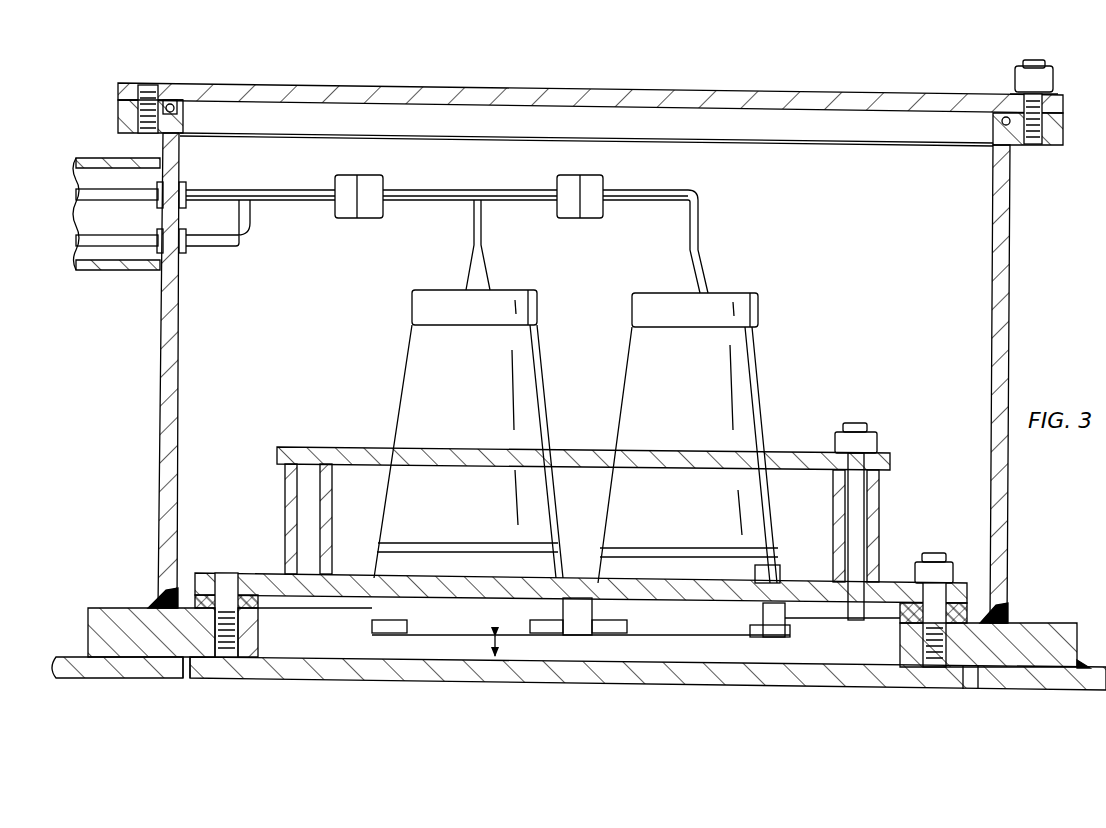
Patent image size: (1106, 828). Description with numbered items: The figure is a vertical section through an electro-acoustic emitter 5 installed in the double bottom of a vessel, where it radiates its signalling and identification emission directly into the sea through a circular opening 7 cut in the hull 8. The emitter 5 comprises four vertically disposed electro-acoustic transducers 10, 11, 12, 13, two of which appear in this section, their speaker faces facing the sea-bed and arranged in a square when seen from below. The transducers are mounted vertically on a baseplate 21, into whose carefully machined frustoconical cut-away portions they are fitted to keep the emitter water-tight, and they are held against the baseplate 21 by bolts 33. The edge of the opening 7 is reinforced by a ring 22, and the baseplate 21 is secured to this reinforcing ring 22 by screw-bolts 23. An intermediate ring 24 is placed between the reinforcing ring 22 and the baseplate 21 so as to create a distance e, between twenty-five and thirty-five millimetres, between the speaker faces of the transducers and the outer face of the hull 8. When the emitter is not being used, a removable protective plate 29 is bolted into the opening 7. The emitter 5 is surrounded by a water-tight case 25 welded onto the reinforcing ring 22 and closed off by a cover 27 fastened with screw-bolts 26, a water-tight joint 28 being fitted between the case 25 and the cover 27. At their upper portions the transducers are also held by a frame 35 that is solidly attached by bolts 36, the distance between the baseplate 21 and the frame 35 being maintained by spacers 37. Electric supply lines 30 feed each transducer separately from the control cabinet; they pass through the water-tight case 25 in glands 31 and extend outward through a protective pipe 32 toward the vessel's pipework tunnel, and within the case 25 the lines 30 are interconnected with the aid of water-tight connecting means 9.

The electro-acoustic emitter 5 is at (766, 258).
The opening 7 is at (182, 682).
The hull 8 is at (84, 660).
The water-tight connecting means 9 is at (346, 181).
The electro-acoustic transducer 10 is at (446, 434).
The electro-acoustic transducer 11 is at (676, 438).
The electro-acoustic transducer 12 is at (412, 338).
The electro-acoustic transducer 13 is at (640, 346).
The baseplate 21 is at (248, 573).
The reinforcing ring 22 is at (130, 608).
The screw-bolts 23 is at (930, 561).
The intermediate ring 24 is at (198, 574).
The water-tight case 25 is at (163, 352).
The screw-bolts 26 is at (1042, 90).
The cover 27 is at (698, 98).
The water-tight joint 28 is at (173, 102).
The removable protective plate 29 is at (668, 680).
The electric supply lines 30 is at (116, 190).
The glands 31 is at (188, 190).
The protective pipe 32 is at (126, 272).
The bolts 33 is at (790, 638).
The frame 35 is at (570, 450).
The bolts 36 is at (840, 440).
The spacers 37 is at (332, 508).
The distance e is at (506, 647).